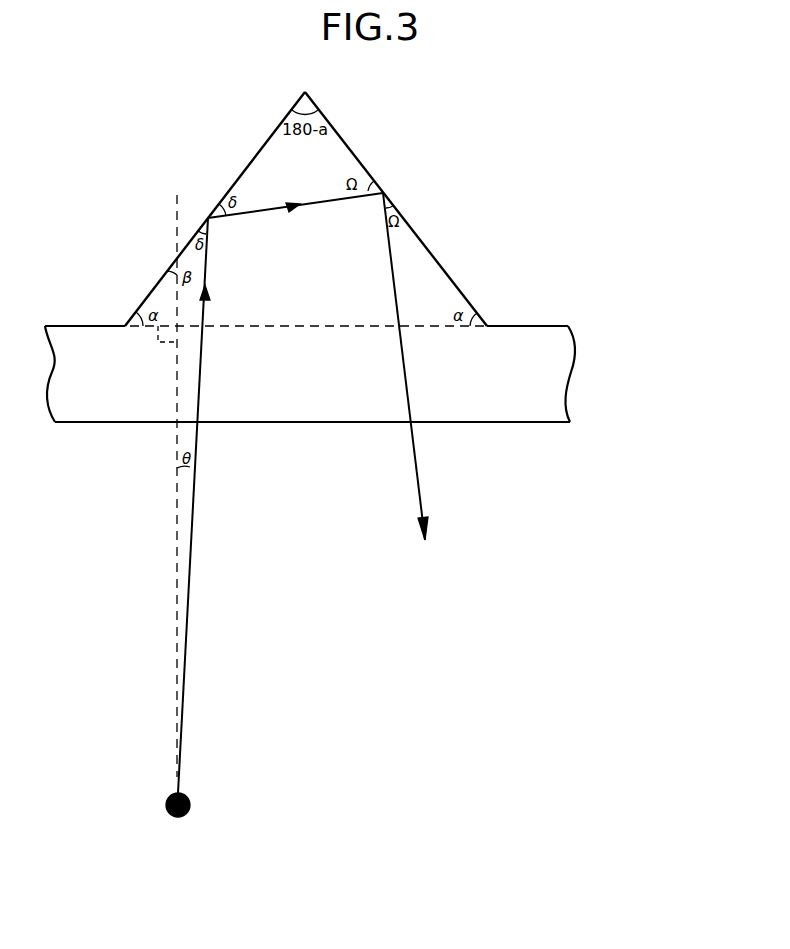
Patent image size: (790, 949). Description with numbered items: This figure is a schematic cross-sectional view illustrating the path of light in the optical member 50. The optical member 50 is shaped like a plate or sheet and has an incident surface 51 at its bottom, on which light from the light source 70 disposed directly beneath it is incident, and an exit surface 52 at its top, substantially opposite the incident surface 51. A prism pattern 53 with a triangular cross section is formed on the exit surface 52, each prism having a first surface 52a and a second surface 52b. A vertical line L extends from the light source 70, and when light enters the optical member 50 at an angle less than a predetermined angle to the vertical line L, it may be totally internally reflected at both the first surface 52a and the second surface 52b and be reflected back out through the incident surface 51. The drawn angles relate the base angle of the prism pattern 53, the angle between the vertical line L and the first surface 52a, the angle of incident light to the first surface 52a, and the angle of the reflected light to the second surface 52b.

The optical member 50 is at (662, 437).
The incident surface 51 is at (528, 423).
The exit surface 52 is at (622, 170).
The first surface 52a is at (253, 162).
The second surface 52b is at (393, 198).
The prism pattern 53 is at (415, 260).
The light source 70 is at (190, 805).
The vertical line L is at (177, 238).